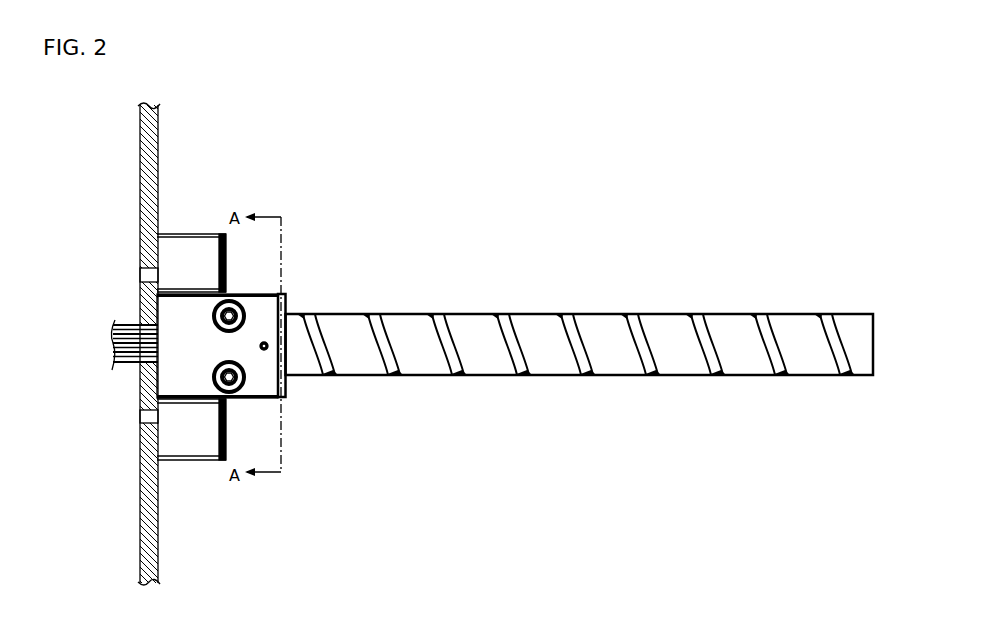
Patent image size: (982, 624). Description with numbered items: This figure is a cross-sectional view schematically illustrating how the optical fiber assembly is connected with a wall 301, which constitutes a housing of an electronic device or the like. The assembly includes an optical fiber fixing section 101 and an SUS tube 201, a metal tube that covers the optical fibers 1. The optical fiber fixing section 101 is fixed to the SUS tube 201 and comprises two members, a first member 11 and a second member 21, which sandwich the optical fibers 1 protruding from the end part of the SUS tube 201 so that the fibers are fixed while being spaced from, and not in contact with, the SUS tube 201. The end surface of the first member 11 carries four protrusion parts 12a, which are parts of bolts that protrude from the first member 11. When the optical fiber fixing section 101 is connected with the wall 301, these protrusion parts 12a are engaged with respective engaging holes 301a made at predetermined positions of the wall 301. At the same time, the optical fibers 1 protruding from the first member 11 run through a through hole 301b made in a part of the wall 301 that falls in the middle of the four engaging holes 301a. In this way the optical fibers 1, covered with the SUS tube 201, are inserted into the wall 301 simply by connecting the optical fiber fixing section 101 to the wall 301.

The wall 301 is at (155, 132).
The engaging holes 301a is at (140, 292).
The through hole 301b is at (148, 368).
The protrusion parts 12a is at (140, 273).
The optical fibers 1 is at (128, 327).
The first member 11 is at (182, 232).
The second member 21 is at (268, 382).
The optical fiber fixing section 101 is at (288, 293).
The SUS tube 201 is at (673, 313).